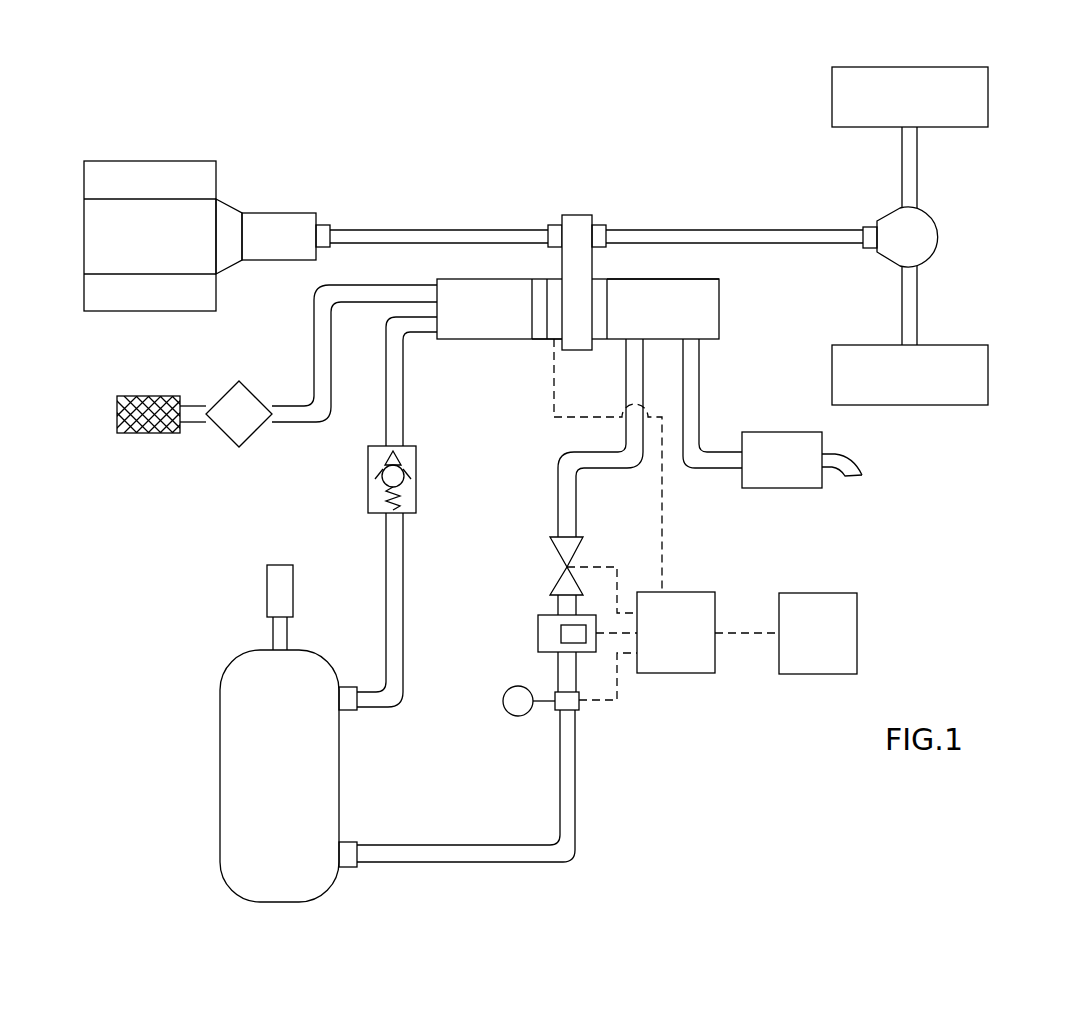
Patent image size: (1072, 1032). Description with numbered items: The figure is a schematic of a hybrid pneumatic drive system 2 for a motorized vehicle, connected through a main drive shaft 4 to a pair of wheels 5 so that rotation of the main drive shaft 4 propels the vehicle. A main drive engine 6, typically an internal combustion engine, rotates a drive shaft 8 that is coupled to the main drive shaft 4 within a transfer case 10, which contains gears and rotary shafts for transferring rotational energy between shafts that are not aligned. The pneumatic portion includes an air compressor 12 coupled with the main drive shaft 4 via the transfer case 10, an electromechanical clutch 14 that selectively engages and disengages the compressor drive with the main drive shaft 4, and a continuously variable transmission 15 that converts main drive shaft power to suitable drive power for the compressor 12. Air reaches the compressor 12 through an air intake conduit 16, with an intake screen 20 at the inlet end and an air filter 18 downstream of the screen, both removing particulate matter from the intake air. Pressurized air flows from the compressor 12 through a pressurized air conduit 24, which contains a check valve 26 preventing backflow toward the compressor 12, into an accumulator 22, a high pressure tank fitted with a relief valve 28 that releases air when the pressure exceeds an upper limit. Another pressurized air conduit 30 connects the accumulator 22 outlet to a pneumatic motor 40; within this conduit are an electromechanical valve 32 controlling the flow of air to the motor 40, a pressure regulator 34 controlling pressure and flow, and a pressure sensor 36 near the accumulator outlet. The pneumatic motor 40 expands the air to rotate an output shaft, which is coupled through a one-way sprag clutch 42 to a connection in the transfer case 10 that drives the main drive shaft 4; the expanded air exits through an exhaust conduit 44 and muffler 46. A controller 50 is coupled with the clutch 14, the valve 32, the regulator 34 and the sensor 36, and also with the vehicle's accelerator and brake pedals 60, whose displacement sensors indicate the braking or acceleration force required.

The hybrid pneumatic drive system 2 is at (480, 152).
The main drive shaft 4 is at (683, 228).
The wheels 5 is at (988, 95).
The main drive engine 6 is at (120, 160).
The drive shaft 8 is at (393, 229).
The transfer case 10 is at (577, 215).
The air compressor 12 is at (477, 341).
The electromechanical clutch 14 is at (557, 278).
The continuously variable transmission 15 is at (540, 340).
The air intake conduit 16 is at (314, 365).
The air filter 18 is at (255, 434).
The intake screen 20 is at (148, 433).
The accumulator 22 is at (220, 772).
The pressurized air conduit 24 is at (403, 585).
The check valve 26 is at (380, 478).
The relief valve 28 is at (267, 590).
The pressurized air conduit 30 is at (487, 862).
The electromechanical valve 32 is at (553, 553).
The pressure regulator 34 is at (538, 636).
The pressure sensor 36 is at (503, 701).
The pneumatic motor 40 is at (719, 307).
The sprag clutch 42 is at (600, 341).
The exhaust conduit 44 is at (699, 402).
The muffler 46 is at (780, 490).
The controller 50 is at (675, 673).
The accelerator and brake pedals 60 is at (857, 633).